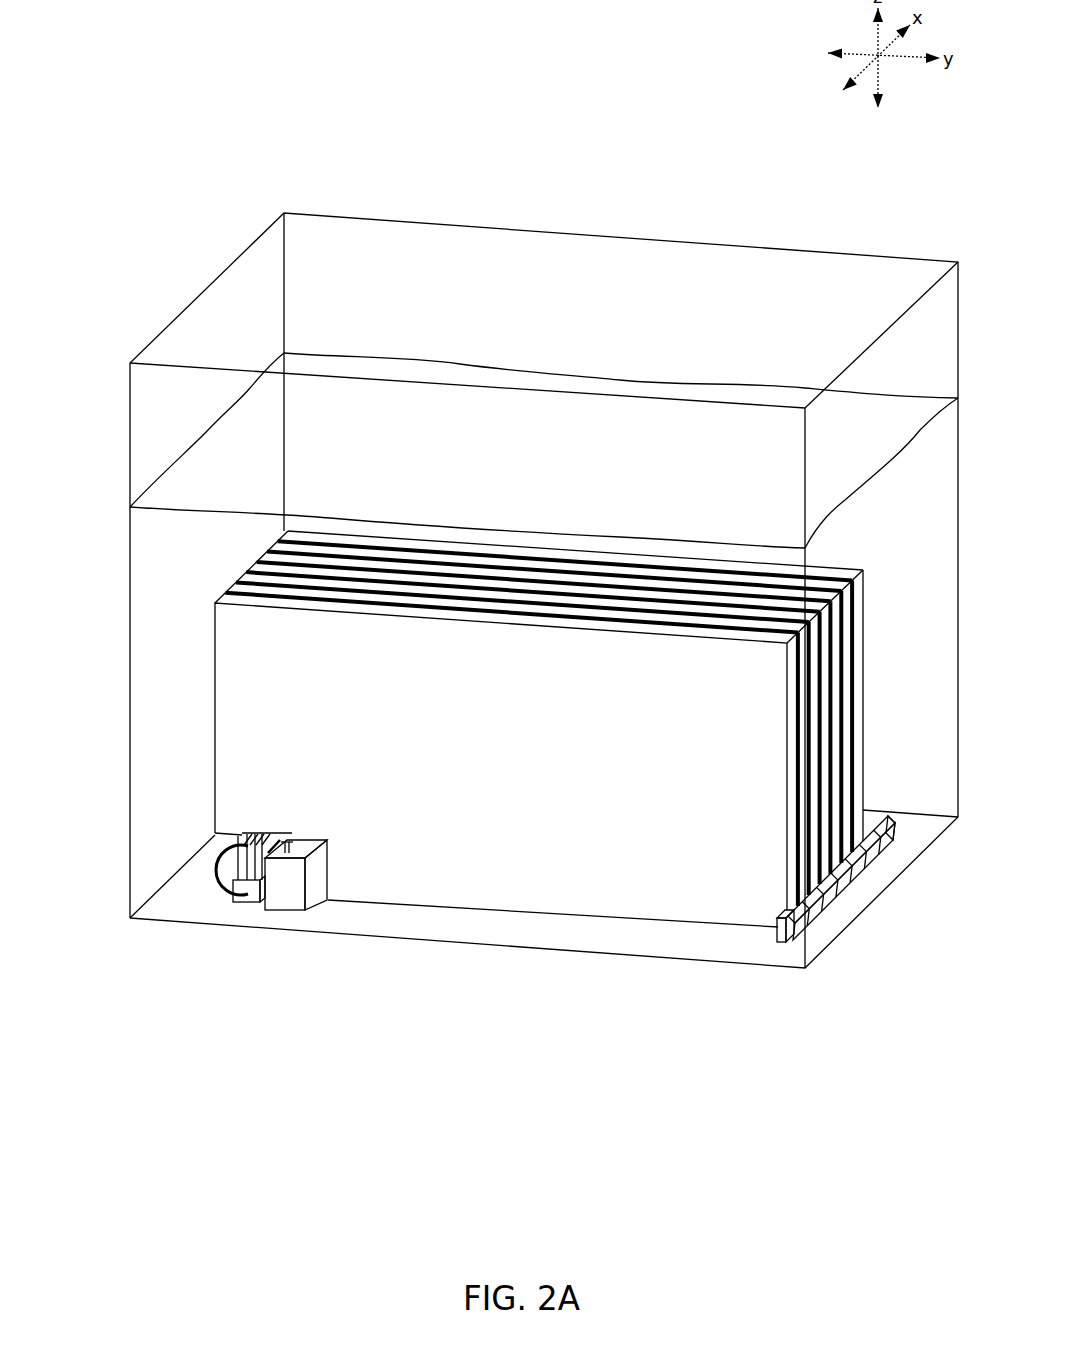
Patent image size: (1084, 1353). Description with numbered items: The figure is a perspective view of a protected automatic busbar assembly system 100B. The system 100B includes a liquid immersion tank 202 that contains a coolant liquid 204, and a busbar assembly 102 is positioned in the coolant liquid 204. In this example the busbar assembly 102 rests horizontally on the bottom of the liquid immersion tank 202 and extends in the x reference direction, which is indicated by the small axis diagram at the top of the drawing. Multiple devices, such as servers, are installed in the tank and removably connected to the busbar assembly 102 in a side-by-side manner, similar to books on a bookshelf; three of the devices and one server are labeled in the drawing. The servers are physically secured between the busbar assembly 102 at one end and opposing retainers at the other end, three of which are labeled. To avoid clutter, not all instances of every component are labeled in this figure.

The system 100B is at (587, 17).
The liquid immersion tank 202 is at (272, 225).
The coolant liquid 204 is at (945, 515).
The busbar assembly 102 is at (247, 914).